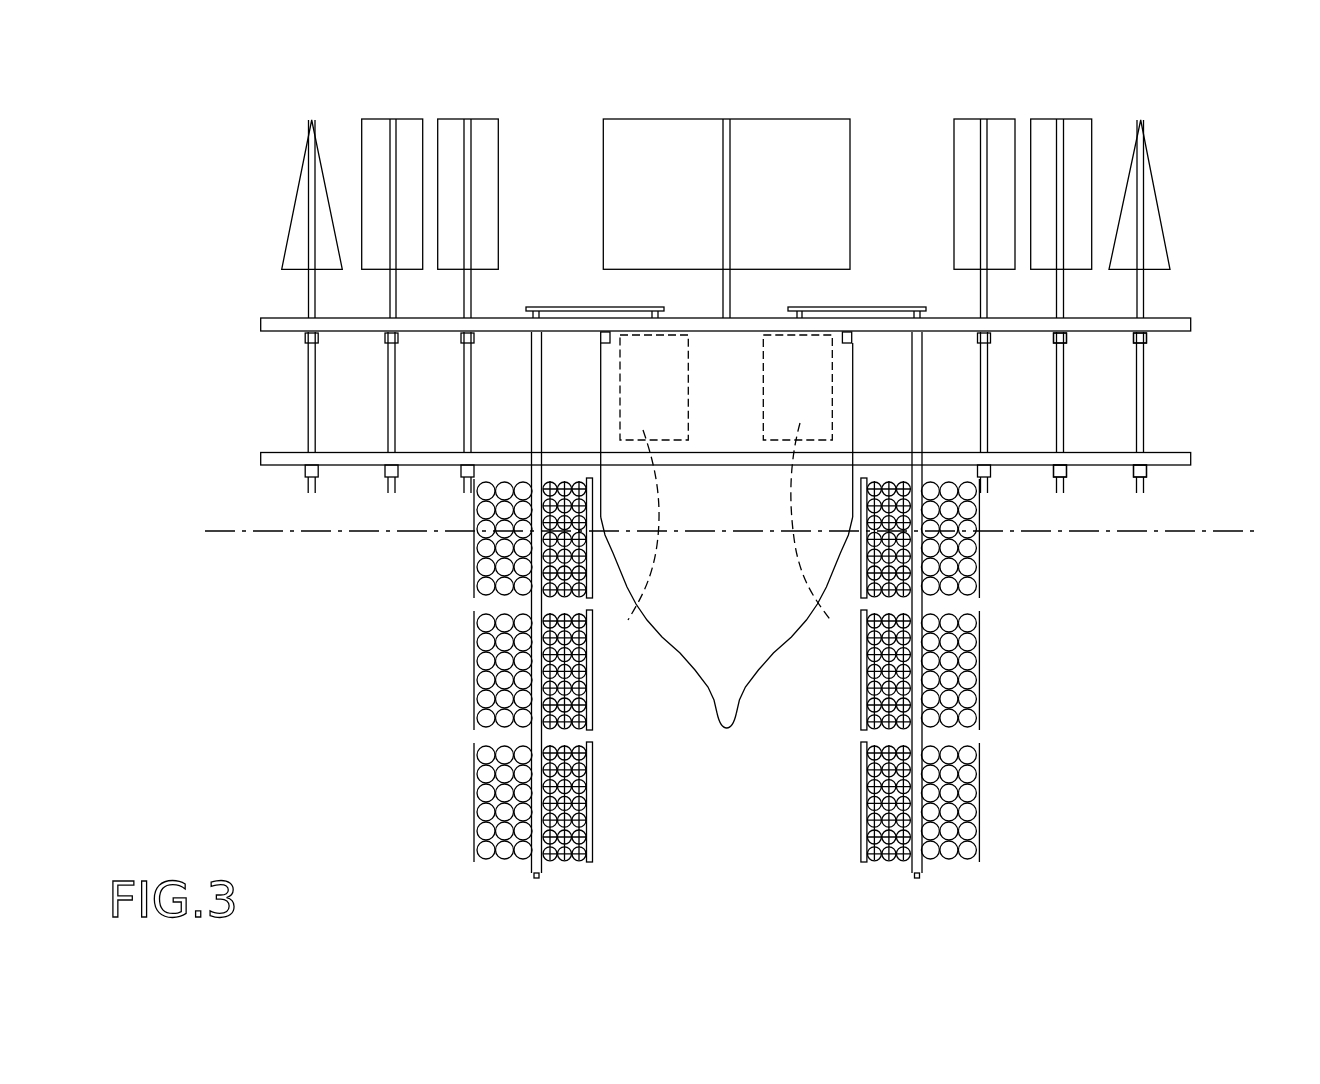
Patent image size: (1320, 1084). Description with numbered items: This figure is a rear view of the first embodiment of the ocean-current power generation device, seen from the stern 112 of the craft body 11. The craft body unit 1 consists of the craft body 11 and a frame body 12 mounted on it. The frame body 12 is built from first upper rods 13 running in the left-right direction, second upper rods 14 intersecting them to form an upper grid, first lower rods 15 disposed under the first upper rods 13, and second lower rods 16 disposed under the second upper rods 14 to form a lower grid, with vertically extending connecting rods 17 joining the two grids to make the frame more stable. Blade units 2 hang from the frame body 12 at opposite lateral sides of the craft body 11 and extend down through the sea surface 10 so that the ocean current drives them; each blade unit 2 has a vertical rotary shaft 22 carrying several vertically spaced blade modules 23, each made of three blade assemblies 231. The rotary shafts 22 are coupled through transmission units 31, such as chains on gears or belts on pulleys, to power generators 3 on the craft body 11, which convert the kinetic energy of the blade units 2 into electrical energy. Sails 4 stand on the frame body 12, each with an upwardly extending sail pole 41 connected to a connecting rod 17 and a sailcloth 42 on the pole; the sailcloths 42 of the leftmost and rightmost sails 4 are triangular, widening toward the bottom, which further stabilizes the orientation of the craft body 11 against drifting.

The craft body unit 1 is at (1208, 317).
The blade unit 2 is at (438, 688).
The power generator 3 is at (732, 493).
The sail 4 is at (382, 108).
The sea surface 10 is at (1217, 533).
The craft body 11 is at (763, 635).
The frame body 12 is at (1187, 338).
The first upper rod 13 is at (1100, 325).
The second upper rod 14 is at (1063, 337).
The first lower rod 15 is at (1102, 465).
The second lower rod 16 is at (1060, 470).
The connecting rod 17 is at (390, 395).
The rotary shaft 22 is at (530, 868).
The blade module 23 is at (472, 553).
The transmission unit 31 is at (583, 307).
The sail pole 41 is at (307, 293).
The sailcloth 42 is at (302, 202).
The stern 112 is at (717, 653).
The blade assembly 231 is at (483, 833).